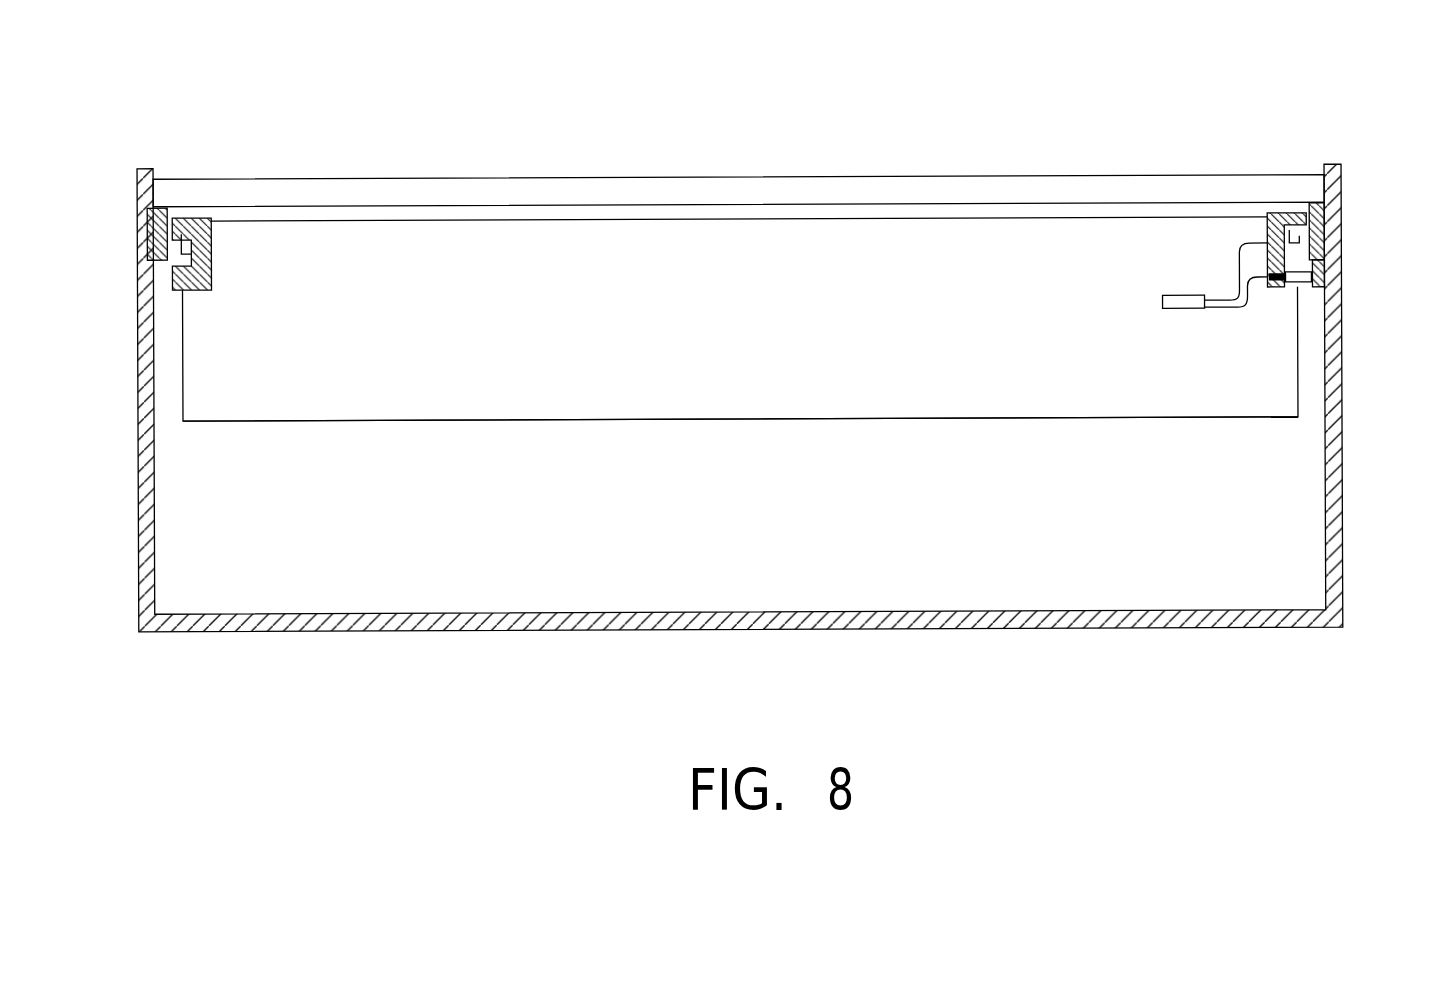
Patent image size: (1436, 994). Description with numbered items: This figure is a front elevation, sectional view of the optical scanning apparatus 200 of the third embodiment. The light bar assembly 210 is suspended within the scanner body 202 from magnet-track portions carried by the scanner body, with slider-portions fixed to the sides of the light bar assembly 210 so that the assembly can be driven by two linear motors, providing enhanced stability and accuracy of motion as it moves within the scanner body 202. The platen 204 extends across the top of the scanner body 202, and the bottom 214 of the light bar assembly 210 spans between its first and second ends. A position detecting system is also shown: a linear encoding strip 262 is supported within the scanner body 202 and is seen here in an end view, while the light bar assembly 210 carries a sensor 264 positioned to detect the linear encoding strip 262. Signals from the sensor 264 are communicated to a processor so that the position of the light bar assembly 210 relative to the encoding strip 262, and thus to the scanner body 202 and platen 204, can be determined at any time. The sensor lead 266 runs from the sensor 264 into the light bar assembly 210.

The optical scanning apparatus 200 is at (1220, 107).
The scanner body 202 is at (1330, 544).
The platen 204 is at (298, 190).
The light bar assembly 210 is at (740, 354).
The tray bottom 214 is at (258, 410).
The linear encoding strip 262 is at (1325, 277).
The sensor 264 is at (1295, 284).
The sensor 266 is at (1163, 304).